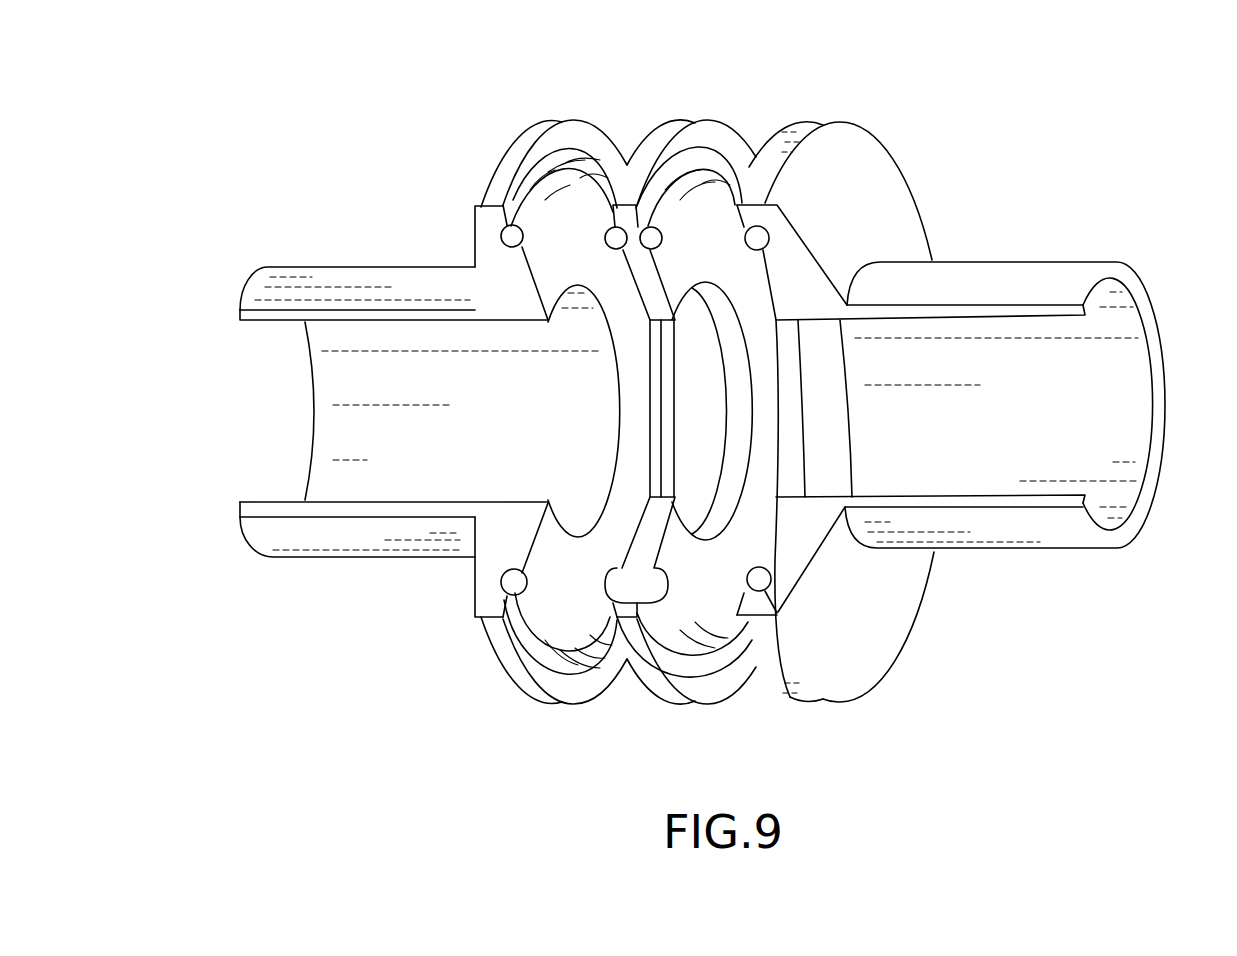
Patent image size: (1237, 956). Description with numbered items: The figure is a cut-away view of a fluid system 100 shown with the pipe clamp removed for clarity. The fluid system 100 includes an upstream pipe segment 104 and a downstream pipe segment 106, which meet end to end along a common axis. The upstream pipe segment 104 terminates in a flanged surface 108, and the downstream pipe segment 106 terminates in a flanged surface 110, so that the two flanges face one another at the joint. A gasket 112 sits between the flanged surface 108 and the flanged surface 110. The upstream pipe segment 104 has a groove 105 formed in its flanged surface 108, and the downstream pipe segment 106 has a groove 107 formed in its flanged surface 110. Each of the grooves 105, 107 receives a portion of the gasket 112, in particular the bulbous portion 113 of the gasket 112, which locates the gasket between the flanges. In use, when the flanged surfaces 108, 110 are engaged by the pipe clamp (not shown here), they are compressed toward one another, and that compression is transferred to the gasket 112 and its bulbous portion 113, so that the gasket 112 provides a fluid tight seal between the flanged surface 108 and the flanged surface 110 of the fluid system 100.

The fluid system 100 is at (425, 100).
The upstream pipe segment 104 is at (283, 280).
The groove 105 is at (507, 597).
The downstream pipe segment 106 is at (1063, 273).
The groove 107 is at (764, 592).
The flanged surface 108 is at (475, 237).
The flanged surface 110 is at (882, 197).
The gasket 112 is at (697, 135).
The bulbous portion 113 is at (673, 640).